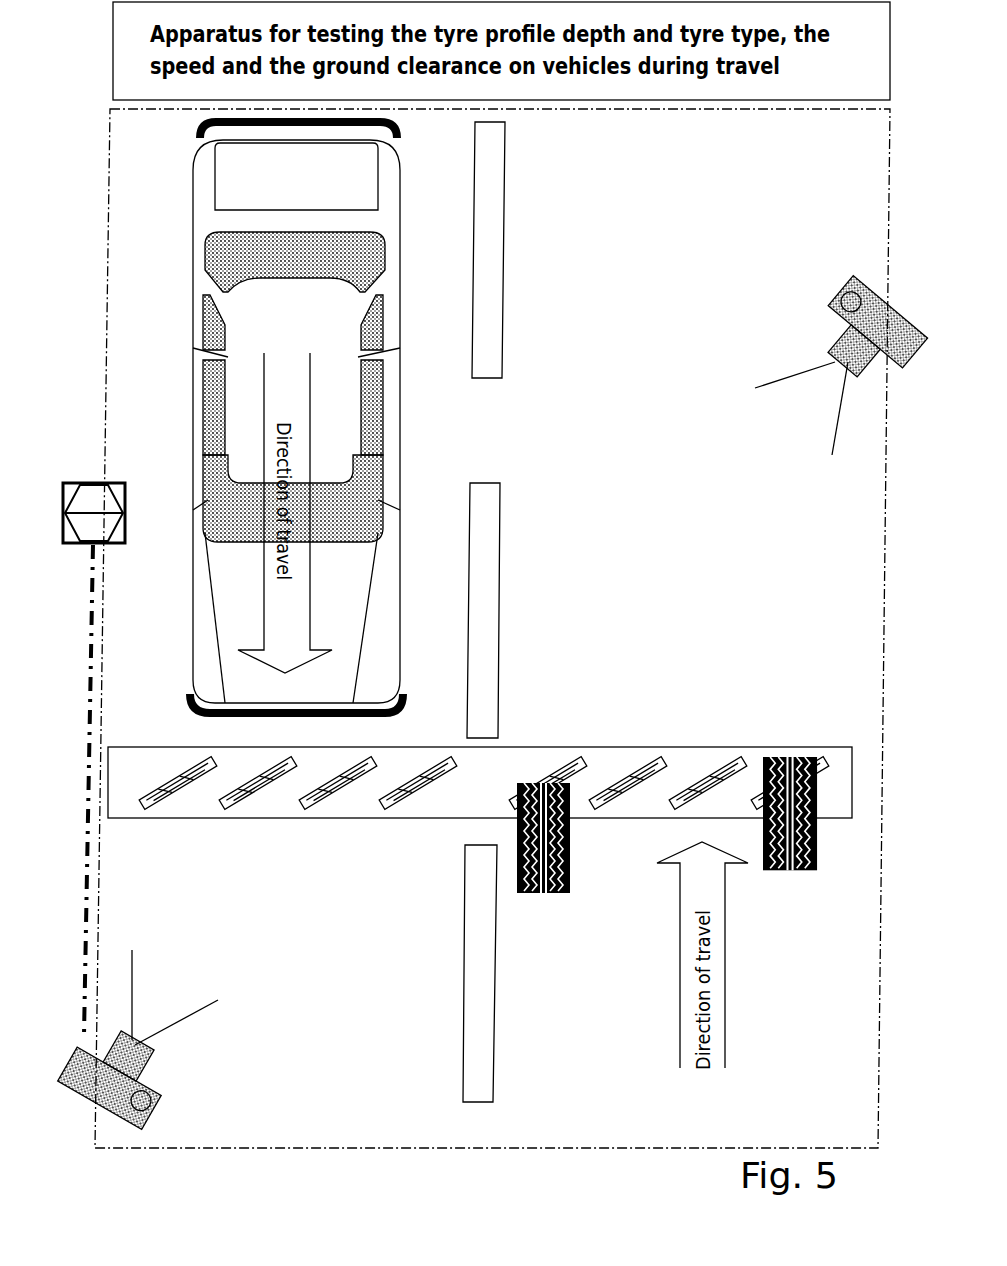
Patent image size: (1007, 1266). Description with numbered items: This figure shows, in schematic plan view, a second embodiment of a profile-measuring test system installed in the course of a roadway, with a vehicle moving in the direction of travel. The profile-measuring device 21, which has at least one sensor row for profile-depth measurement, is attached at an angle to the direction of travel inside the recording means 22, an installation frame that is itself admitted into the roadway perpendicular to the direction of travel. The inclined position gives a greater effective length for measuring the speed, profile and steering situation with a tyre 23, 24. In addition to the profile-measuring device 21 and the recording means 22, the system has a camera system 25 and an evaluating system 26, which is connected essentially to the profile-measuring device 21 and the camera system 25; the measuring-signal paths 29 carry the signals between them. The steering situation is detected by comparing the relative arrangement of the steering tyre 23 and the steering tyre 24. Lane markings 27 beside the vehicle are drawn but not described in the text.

The profile-measuring device 21 is at (175, 778).
The recording means 22 is at (285, 818).
The tyre 23 is at (790, 870).
The tyre 24 is at (538, 893).
The camera system 25 is at (848, 290).
The evaluating system 26 is at (113, 483).
The lane marking bars 27 is at (500, 306).
The measuring-signal paths 29 is at (96, 668).